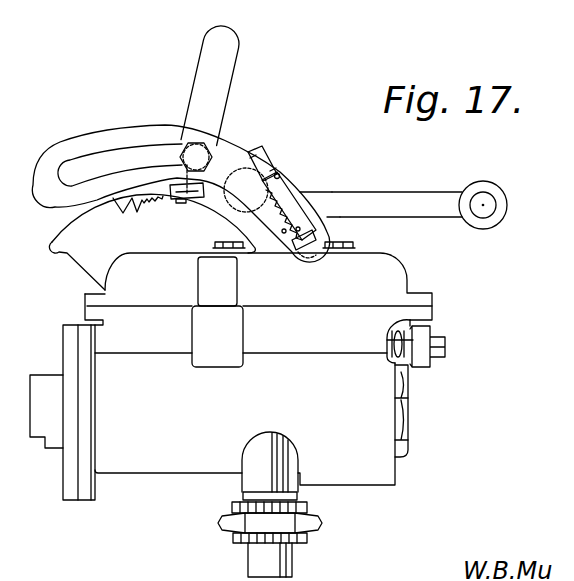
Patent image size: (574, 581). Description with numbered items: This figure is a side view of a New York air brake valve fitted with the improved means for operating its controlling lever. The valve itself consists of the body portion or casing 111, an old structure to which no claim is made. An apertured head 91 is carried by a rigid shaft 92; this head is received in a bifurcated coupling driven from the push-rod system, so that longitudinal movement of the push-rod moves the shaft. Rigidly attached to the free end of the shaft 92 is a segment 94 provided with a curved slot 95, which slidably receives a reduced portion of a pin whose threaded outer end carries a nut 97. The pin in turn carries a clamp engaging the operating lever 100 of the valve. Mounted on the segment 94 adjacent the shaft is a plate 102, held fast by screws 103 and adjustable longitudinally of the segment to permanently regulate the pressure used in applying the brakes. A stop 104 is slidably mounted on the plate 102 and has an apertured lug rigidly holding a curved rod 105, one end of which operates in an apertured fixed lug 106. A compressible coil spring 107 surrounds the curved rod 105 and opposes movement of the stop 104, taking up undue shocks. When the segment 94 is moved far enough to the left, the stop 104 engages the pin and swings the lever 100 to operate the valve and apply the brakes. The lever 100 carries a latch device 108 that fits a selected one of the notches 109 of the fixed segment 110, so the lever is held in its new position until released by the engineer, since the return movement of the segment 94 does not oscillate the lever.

The apertured head 91 is at (497, 205).
The rigid shaft 92 is at (393, 201).
The segment 94 is at (102, 140).
The curved slot 95 is at (120, 165).
The nut 97 is at (200, 157).
The operating lever 100 is at (220, 52).
The plate 102 is at (294, 192).
The screws 103 is at (280, 175).
The stop 104 is at (248, 200).
The curved rod 105 is at (240, 198).
The apertured fixed lug 106 is at (300, 251).
The compressible coil spring 107 is at (298, 231).
The latch device 108 is at (178, 202).
The notches 109 is at (137, 206).
The segment 110 is at (152, 242).
The body portion or casing 111 is at (237, 409).